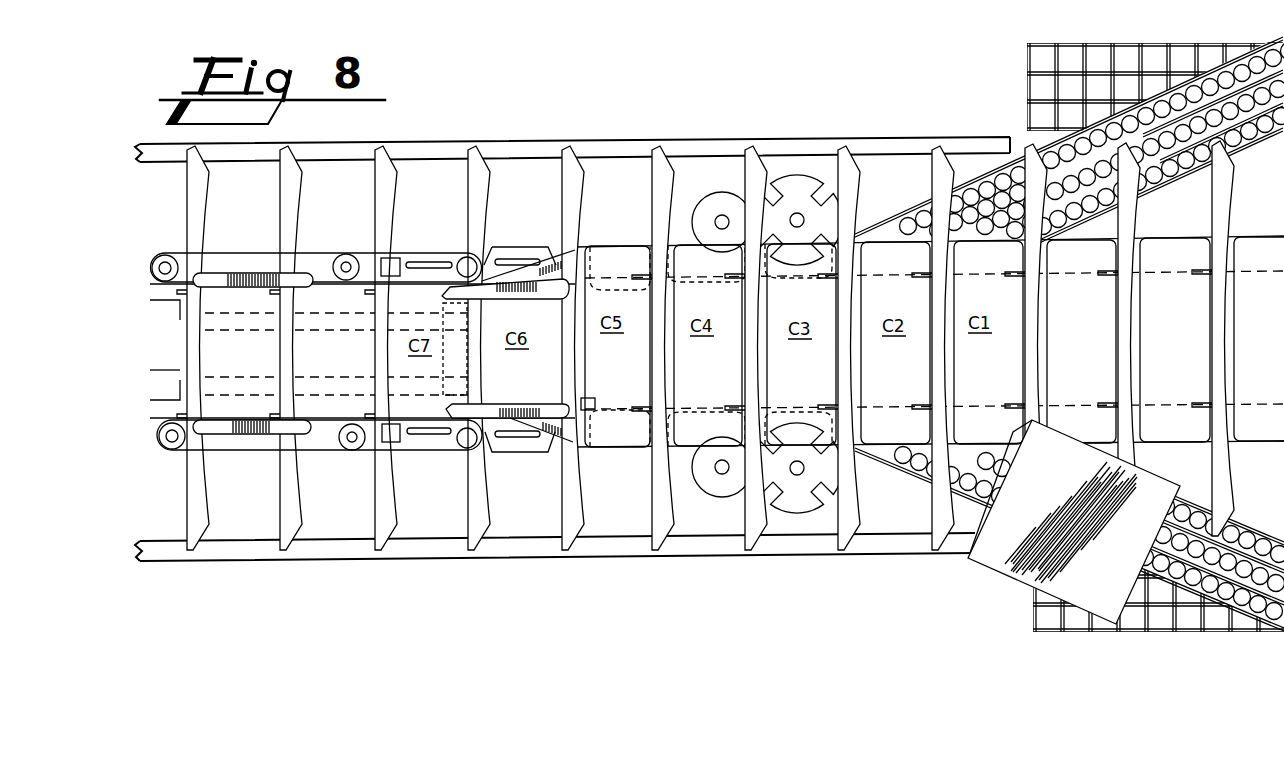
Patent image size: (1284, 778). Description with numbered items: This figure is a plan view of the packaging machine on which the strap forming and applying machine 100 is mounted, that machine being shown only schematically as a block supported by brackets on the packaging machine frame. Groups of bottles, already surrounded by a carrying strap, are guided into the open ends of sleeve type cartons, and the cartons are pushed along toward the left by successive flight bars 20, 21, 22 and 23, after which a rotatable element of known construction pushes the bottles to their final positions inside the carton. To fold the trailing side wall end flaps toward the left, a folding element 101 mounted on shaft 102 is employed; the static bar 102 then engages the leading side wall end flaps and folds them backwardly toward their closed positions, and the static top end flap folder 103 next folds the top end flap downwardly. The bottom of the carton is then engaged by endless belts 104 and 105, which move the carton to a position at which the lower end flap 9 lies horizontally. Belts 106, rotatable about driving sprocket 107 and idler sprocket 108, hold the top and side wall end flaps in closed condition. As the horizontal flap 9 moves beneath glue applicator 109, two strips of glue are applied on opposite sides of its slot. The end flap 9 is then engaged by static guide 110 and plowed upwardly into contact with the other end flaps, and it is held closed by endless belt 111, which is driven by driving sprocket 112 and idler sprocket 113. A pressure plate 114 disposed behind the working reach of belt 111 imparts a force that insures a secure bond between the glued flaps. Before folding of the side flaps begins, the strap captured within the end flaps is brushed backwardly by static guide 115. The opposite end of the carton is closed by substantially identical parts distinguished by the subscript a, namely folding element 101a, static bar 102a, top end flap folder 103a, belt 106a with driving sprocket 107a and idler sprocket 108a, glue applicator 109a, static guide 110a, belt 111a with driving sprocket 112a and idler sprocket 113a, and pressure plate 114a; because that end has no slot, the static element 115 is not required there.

The lower end flap 9 is at (518, 455).
The flight bar 20 is at (940, 522).
The flight bar 21 is at (1032, 368).
The flight bar 22 is at (1125, 355).
The flight bar 23 is at (1218, 345).
The strap forming and applying machine 100 is at (985, 565).
The folding element 101 is at (710, 470).
The folding element 101a is at (710, 215).
The static bar 102 is at (628, 447).
The static bar 102a is at (612, 252).
The static top end flap folder 103 is at (500, 404).
The static top end flap folder 103a is at (497, 300).
The endless belt 104 is at (180, 378).
The endless belt 105 is at (180, 318).
The belt 106 is at (428, 440).
The belt 106a is at (430, 262).
The driving sprocket 107 is at (352, 452).
The driving sprocket 107a is at (348, 262).
The idler sprocket 108 is at (470, 452).
The idler sprocket 108a is at (466, 262).
The glue applicator 109 is at (392, 445).
The glue applicator 109a is at (390, 260).
The static guide 110 is at (365, 418).
The static guide 110a is at (363, 286).
The belt 111 is at (230, 435).
The belt 111a is at (238, 284).
The driving sprocket 112 is at (162, 422).
The driving sprocket 112a is at (165, 253).
The idler sprocket 113 is at (342, 450).
The idler sprocket 113a is at (343, 256).
The pressure plate 114 is at (220, 430).
The pressure plate 114a is at (226, 275).
The static guide 115 is at (590, 398).